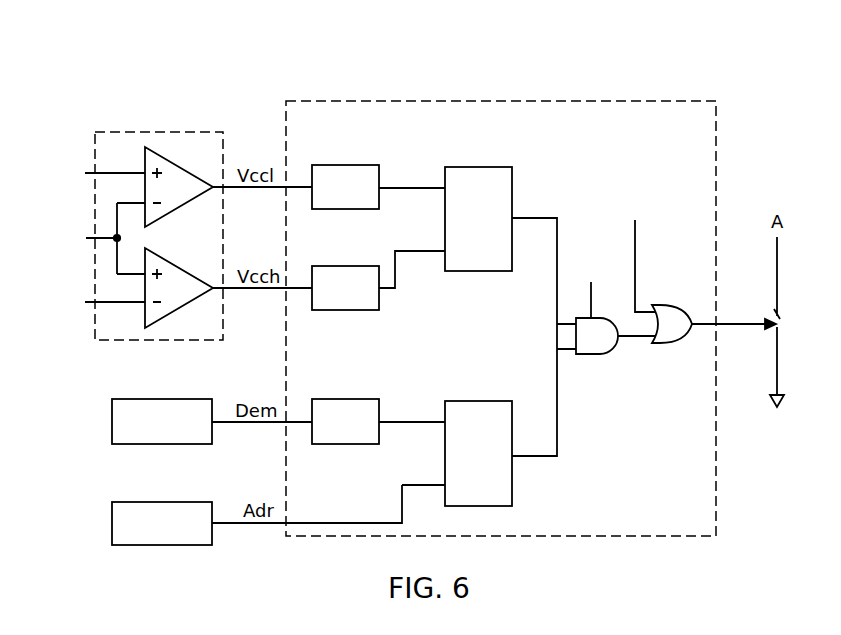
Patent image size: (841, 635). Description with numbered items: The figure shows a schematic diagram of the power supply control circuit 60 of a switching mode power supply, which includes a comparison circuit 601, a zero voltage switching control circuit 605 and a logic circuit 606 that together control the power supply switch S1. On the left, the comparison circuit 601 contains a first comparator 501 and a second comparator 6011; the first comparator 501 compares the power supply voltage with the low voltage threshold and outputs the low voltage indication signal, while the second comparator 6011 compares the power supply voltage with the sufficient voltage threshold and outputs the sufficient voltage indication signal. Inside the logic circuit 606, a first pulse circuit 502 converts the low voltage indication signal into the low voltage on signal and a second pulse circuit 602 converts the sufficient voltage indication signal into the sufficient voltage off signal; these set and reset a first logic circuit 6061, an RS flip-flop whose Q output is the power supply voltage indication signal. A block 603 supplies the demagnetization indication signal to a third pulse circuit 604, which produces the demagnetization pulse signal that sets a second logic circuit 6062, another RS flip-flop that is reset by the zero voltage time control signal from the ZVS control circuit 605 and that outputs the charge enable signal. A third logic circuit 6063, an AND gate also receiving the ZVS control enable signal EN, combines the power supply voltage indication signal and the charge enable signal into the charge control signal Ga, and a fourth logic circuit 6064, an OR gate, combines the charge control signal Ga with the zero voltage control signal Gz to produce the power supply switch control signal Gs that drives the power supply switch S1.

The power supply control circuit 60 is at (738, 72).
The comparison circuit 601 is at (145, 132).
The first comparator 501 is at (197, 156).
The second comparator 6011 is at (196, 258).
The logic circuit 606 is at (505, 101).
The first pulse circuit 502 is at (345, 187).
The second pulse circuit 602 is at (345, 288).
The first logic circuit 6061 is at (468, 167).
The second logic circuit 6062 is at (492, 384).
The third logic circuit 6063 is at (597, 356).
The fourth logic circuit 6064 is at (658, 305).
The demagnetization detection unit 603 is at (162, 421).
The third pulse circuit 604 is at (345, 421).
The zero voltage switching (ZVS) control circuit 605 is at (162, 523).
The power supply switch S1 is at (788, 322).